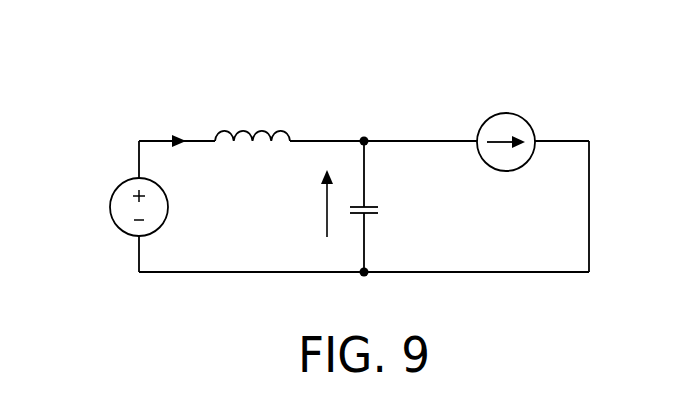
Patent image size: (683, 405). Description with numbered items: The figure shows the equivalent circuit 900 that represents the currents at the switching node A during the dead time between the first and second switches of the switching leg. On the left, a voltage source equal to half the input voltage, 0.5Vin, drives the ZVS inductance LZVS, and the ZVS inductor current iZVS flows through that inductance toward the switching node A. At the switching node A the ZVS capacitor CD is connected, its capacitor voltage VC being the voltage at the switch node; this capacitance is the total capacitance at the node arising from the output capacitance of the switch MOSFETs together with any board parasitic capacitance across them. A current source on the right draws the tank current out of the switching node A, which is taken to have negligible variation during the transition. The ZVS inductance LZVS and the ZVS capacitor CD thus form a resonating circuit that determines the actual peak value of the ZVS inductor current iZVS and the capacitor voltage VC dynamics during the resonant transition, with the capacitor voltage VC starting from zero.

The equivalent circuit 900 is at (162, 68).
The ZVS inductor current iZVS is at (171, 153).
The half input voltage source 0.5Vin is at (105, 207).
The ZVS inductance LZVS is at (252, 146).
The switching node A is at (363, 129).
The ZVS capacitor CD is at (379, 206).
The capacitor voltage VC is at (315, 203).